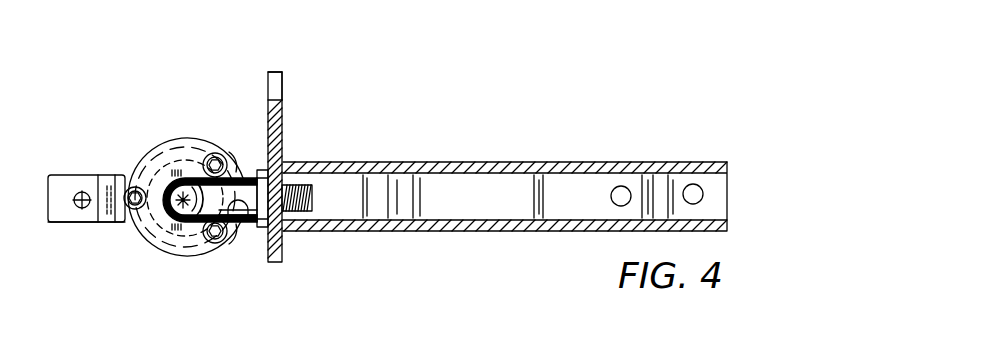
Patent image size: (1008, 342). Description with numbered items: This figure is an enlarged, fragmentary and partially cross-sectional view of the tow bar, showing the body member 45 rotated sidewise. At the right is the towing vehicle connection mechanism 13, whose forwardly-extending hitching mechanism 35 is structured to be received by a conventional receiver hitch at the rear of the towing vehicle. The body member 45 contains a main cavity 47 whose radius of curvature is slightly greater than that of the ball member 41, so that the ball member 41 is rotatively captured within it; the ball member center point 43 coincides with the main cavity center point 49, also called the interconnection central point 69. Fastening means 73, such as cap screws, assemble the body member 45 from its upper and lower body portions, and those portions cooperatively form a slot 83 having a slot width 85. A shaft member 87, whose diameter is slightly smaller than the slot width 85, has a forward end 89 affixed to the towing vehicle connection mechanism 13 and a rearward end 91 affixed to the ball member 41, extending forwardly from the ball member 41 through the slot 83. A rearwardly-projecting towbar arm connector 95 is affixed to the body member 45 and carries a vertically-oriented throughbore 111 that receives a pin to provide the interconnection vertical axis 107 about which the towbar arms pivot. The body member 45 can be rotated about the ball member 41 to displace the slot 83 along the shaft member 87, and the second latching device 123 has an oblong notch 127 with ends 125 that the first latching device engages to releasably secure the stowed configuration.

The towing vehicle connection mechanism 13 is at (512, 124).
The hitching mechanism 35 is at (455, 162).
The ball member 41 is at (197, 186).
The ball member center point 43 is at (186, 203).
The body member 45 is at (147, 156).
The main cavity 47 is at (185, 176).
The main cavity center point 49 is at (189, 216).
The interconnection central point 69 is at (182, 204).
The fastening means 73 is at (130, 187).
The slot 83 is at (245, 206).
The slot width 85 is at (238, 178).
The shaft member 87 is at (283, 147).
The forward end 89 is at (285, 164).
The rearward end 91 is at (250, 186).
The towbar arm connector 95 is at (72, 192).
The interconnection vertical axis 107 is at (67, 192).
The throughbore 111 is at (84, 192).
The second latching device 123 is at (285, 66).
The end 125 is at (283, 80).
The oblong notch 127 is at (272, 70).